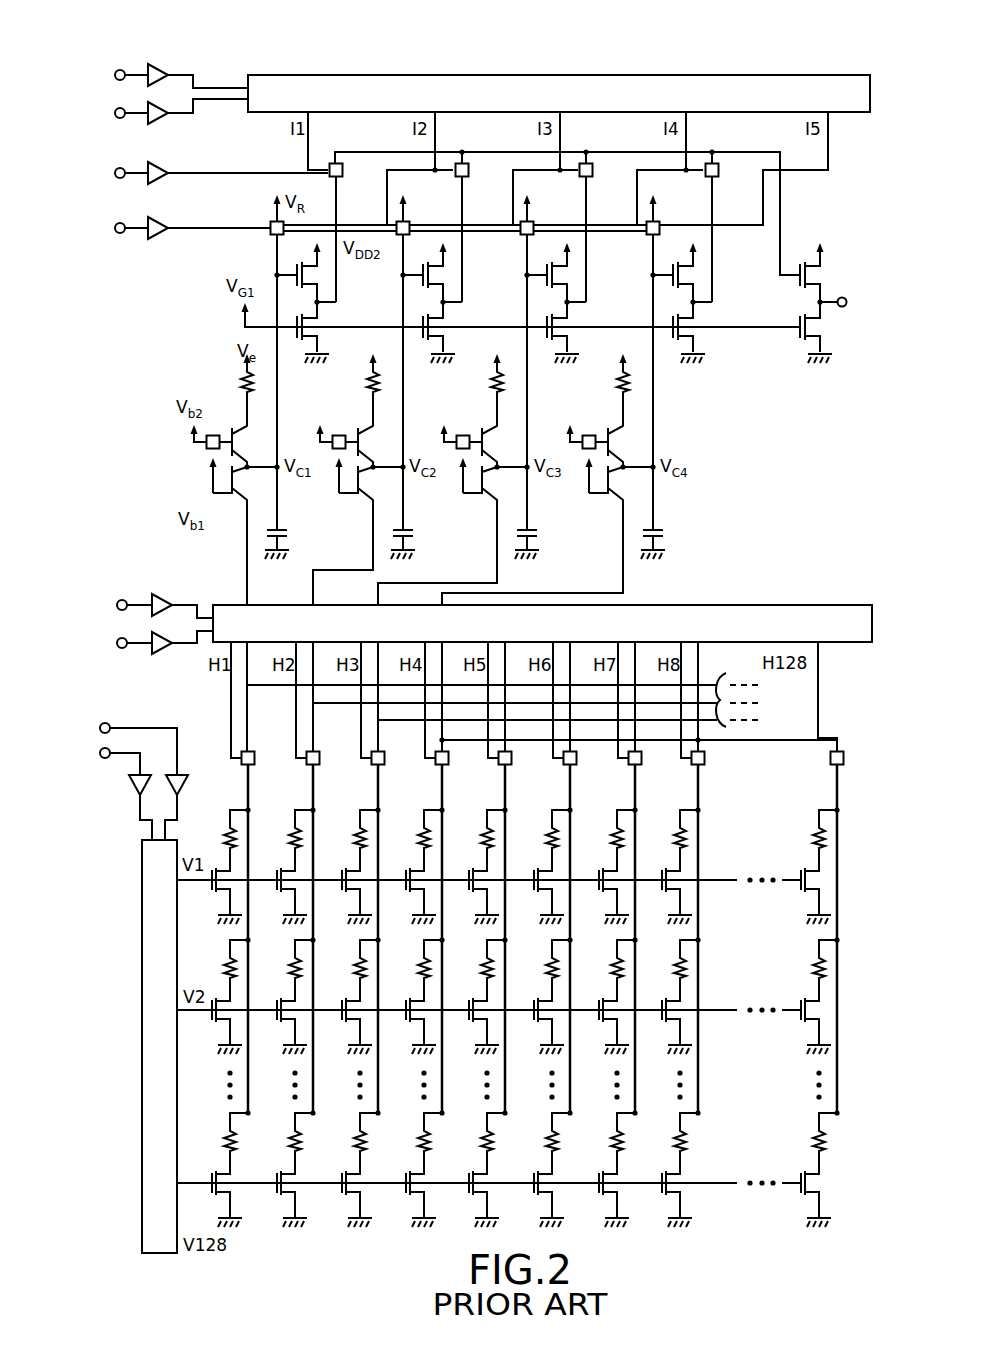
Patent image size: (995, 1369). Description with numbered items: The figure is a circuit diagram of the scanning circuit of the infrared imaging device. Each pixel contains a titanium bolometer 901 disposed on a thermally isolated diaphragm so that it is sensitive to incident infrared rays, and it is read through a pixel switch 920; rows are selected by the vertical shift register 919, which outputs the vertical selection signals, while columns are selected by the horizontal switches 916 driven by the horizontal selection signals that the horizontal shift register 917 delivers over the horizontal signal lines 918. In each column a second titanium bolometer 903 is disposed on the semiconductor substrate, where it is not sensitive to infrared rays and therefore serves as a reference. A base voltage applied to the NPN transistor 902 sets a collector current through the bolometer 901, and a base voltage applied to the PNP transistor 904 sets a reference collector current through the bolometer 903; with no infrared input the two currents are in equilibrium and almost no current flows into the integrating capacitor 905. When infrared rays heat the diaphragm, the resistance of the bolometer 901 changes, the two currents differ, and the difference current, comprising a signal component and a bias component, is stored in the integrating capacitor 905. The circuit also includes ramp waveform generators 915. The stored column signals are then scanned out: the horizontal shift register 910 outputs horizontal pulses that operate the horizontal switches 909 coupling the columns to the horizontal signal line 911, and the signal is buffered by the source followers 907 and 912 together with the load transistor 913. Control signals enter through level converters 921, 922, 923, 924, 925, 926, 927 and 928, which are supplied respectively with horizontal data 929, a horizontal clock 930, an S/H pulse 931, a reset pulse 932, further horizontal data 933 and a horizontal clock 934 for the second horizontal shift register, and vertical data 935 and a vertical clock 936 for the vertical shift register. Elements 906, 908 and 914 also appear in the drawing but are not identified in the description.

The titanium bolometer 901 is at (225, 835).
The NPN transistor 902 is at (240, 513).
The titanium bolometer 903 is at (240, 392).
The PNP transistor 904 is at (248, 433).
The integrating capacitor 905 is at (296, 533).
The switch 906 is at (270, 225).
The source follower 907 is at (317, 272).
The MOS transistor 908 is at (322, 315).
The horizontal switch 909 is at (340, 177).
The horizontal shift register 910 is at (385, 75).
The horizontal signal line 911 is at (372, 152).
The source follower 912 is at (825, 265).
The load transistor 913 is at (826, 331).
The output terminal 914 is at (845, 297).
The ramp waveform generator 915 is at (205, 450).
The horizontal switch 916 is at (252, 766).
The horizontal shift register 917 is at (790, 605).
The horizontal signal lines 918 is at (724, 730).
The vertical shift register 919 is at (142, 970).
The pixel switch 920 is at (212, 895).
The level converter 921 is at (160, 64).
The level converter 922 is at (160, 124).
The level converter 923 is at (150, 162).
The level converter 924 is at (158, 240).
The level converter 925 is at (162, 594).
The level converter 926 is at (162, 654).
The level converter 927 is at (185, 776).
The buffer 928 is at (132, 790).
The horizontal data 929 is at (114, 75).
The horizontal clock 930 is at (114, 113).
The S/H pulse 931 is at (114, 173).
The reset pulse 932 is at (114, 228).
The horizontal data 933 is at (116, 605).
The horizontal clock 934 is at (116, 643).
The vertical data 935 is at (120, 740).
The vertical clock 936 is at (102, 763).